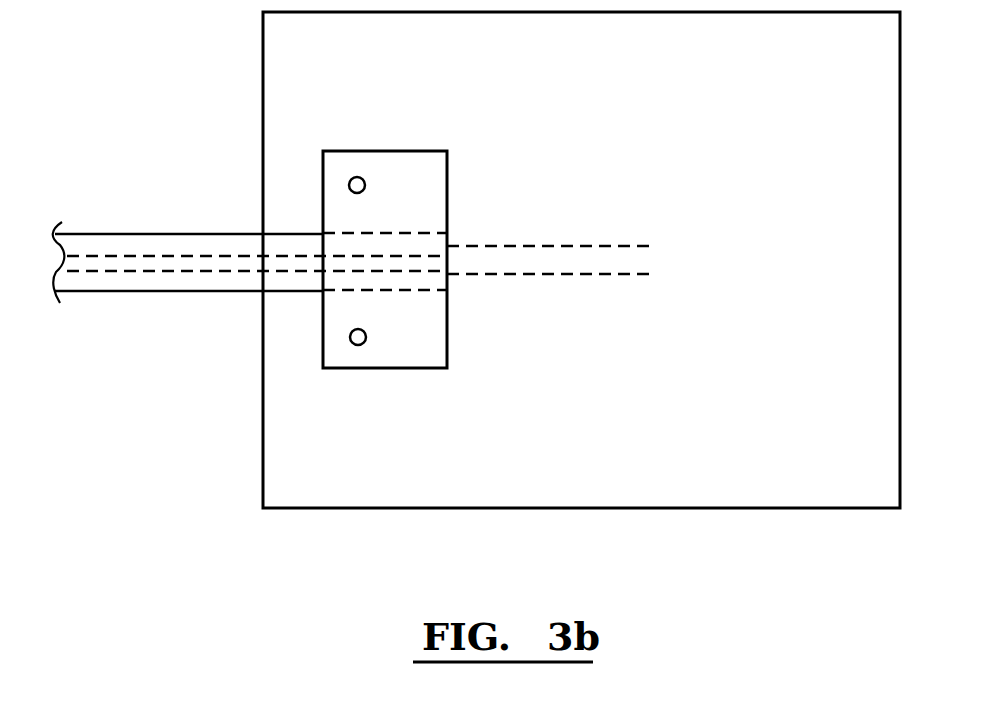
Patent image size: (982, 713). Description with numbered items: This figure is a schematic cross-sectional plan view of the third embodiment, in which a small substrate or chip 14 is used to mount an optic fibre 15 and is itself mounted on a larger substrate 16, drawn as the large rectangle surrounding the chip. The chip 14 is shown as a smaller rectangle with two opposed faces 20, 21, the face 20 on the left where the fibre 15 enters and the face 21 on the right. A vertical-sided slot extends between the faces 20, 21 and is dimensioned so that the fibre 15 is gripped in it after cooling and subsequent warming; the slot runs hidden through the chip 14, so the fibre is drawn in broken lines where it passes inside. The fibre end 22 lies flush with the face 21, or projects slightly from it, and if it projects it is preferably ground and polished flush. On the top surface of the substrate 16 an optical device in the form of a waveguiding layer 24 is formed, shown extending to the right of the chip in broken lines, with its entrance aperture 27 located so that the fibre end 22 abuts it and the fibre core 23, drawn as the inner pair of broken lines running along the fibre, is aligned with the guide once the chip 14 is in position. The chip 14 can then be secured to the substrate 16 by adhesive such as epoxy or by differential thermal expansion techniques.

The chip 14 is at (428, 199).
The optic fibre 15 is at (115, 234).
The larger substrate 16 is at (804, 139).
The opposed face of the chip 20 is at (323, 328).
The opposed face of the chip 21 is at (447, 341).
The fibre end 22 is at (437, 270).
The fibre core 23 is at (98, 263).
The waveguiding layer 24 is at (588, 257).
The entrance aperture 27 is at (447, 261).